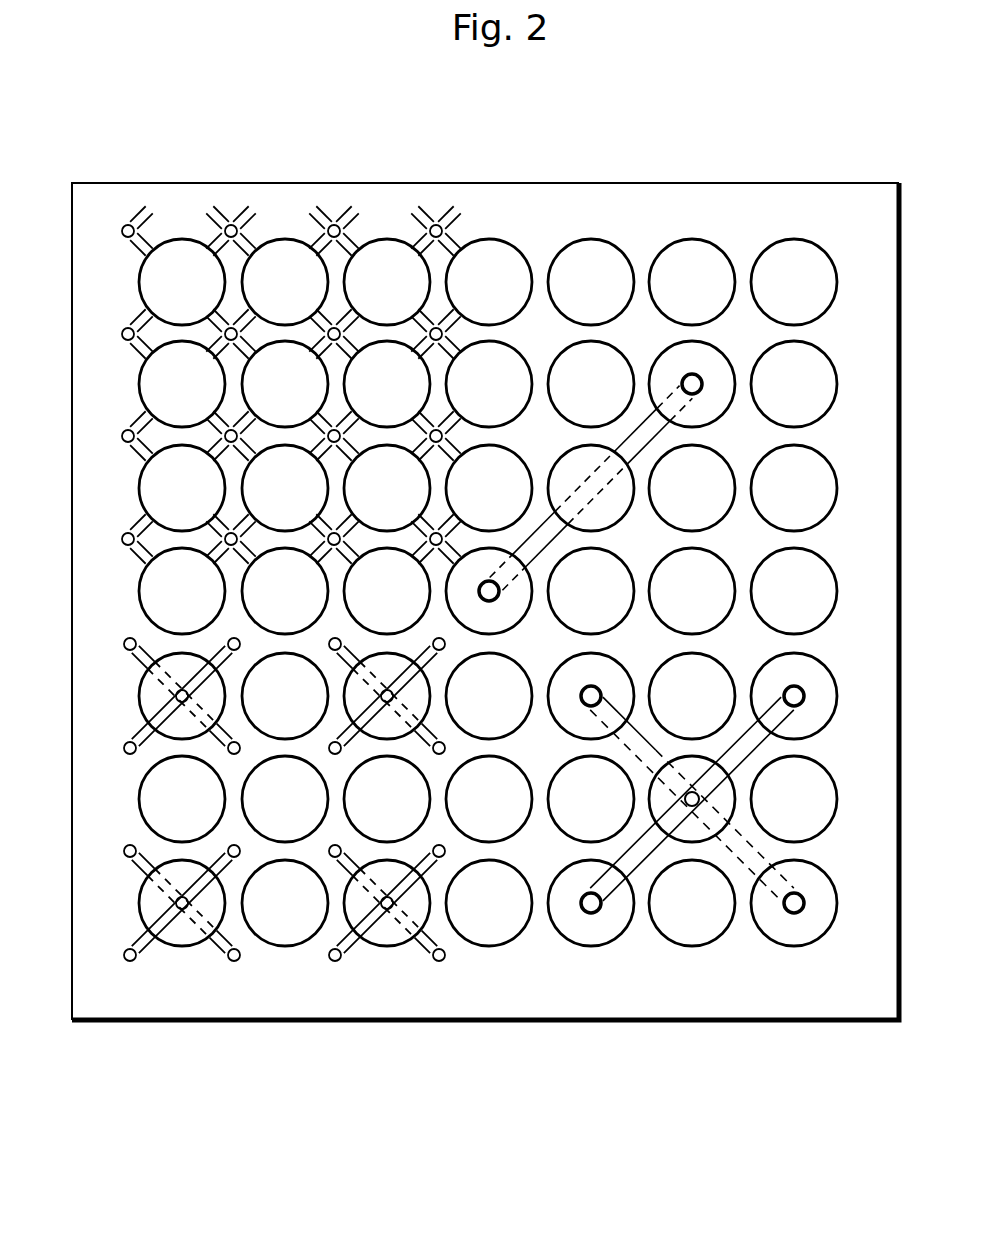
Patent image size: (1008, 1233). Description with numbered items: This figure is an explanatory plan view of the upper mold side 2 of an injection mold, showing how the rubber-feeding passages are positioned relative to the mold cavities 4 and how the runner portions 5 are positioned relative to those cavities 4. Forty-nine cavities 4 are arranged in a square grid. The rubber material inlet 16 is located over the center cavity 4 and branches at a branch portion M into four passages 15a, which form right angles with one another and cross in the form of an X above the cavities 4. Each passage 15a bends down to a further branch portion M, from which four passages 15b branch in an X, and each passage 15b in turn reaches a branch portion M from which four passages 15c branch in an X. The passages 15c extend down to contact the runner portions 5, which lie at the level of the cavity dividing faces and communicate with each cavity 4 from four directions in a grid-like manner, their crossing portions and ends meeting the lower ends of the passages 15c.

The upper mold side 2 is at (463, 157).
The cavity 4 is at (683, 294).
The runner portion 5 is at (216, 246).
The passage 15a is at (589, 504).
The passage 15b is at (752, 813).
The passage 15c is at (236, 227).
The rubber material inlet 16 is at (490, 594).
The branch portion M is at (686, 797).